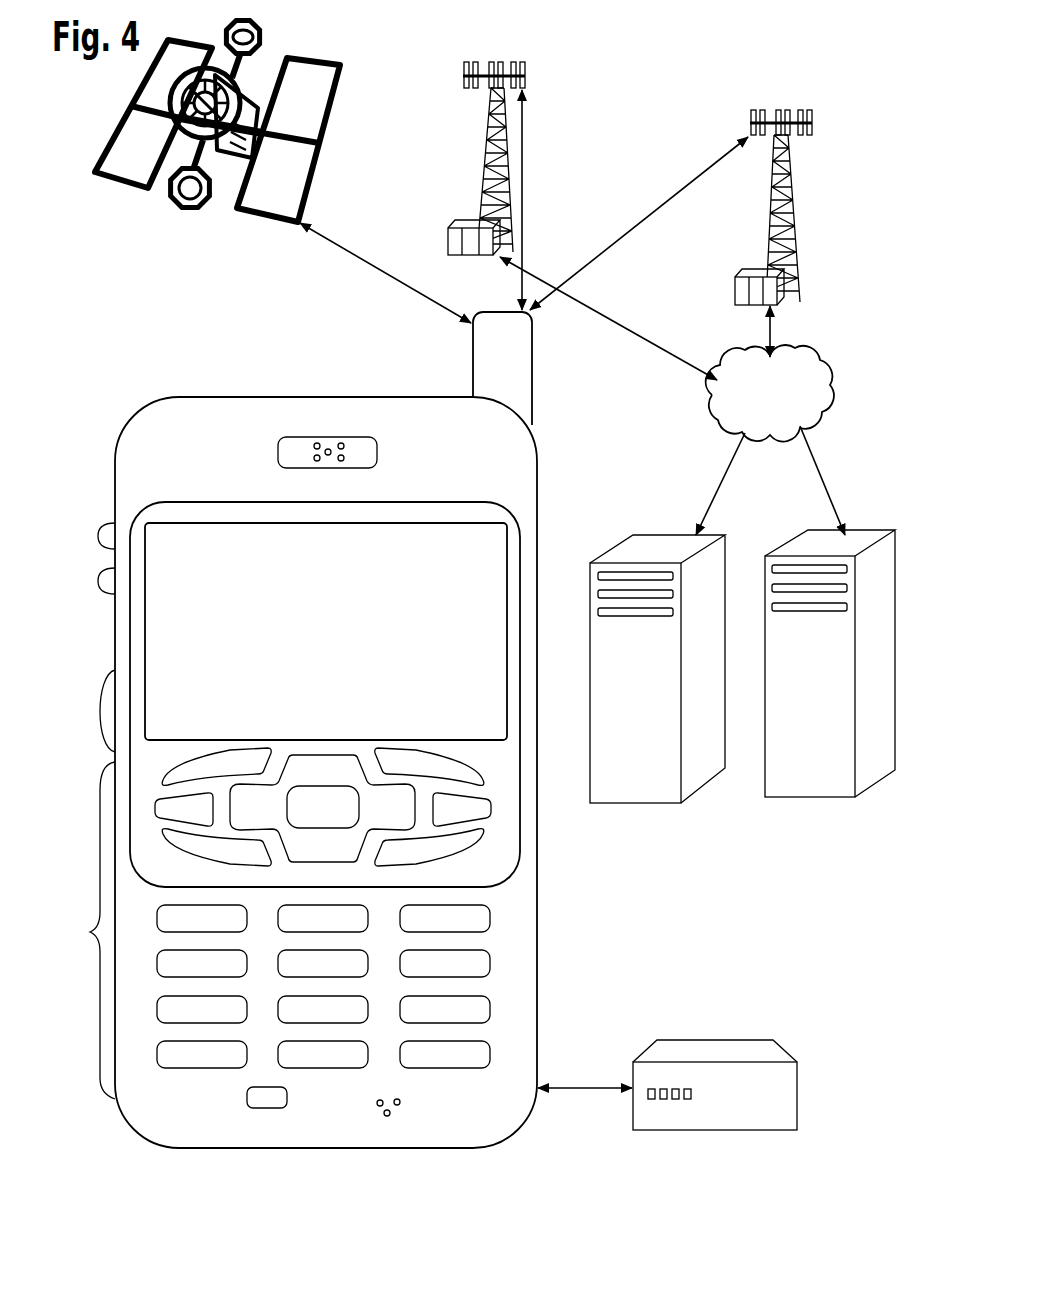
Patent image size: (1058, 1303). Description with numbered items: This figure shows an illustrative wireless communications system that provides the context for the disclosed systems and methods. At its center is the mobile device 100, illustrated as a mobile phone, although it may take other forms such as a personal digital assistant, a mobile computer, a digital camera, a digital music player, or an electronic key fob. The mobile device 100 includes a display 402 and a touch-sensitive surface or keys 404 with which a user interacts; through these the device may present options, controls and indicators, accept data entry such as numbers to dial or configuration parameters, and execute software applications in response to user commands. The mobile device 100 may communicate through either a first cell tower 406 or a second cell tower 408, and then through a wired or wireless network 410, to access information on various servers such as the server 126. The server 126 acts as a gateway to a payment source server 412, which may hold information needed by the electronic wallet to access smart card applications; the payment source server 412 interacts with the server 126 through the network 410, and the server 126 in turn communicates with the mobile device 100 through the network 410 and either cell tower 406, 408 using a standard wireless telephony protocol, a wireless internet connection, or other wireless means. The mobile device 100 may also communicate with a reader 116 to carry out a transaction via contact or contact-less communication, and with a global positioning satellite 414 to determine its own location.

The mobile device 100 is at (318, 746).
The display 402 is at (503, 537).
The keys 404 is at (90, 932).
The first cell tower 406 is at (477, 167).
The second cell tower 408 is at (763, 217).
The network 410 is at (730, 420).
The payment source server 412 is at (793, 797).
The server 126 is at (618, 803).
The global positioning satellite 414 is at (327, 123).
The reader 116 is at (690, 1130).